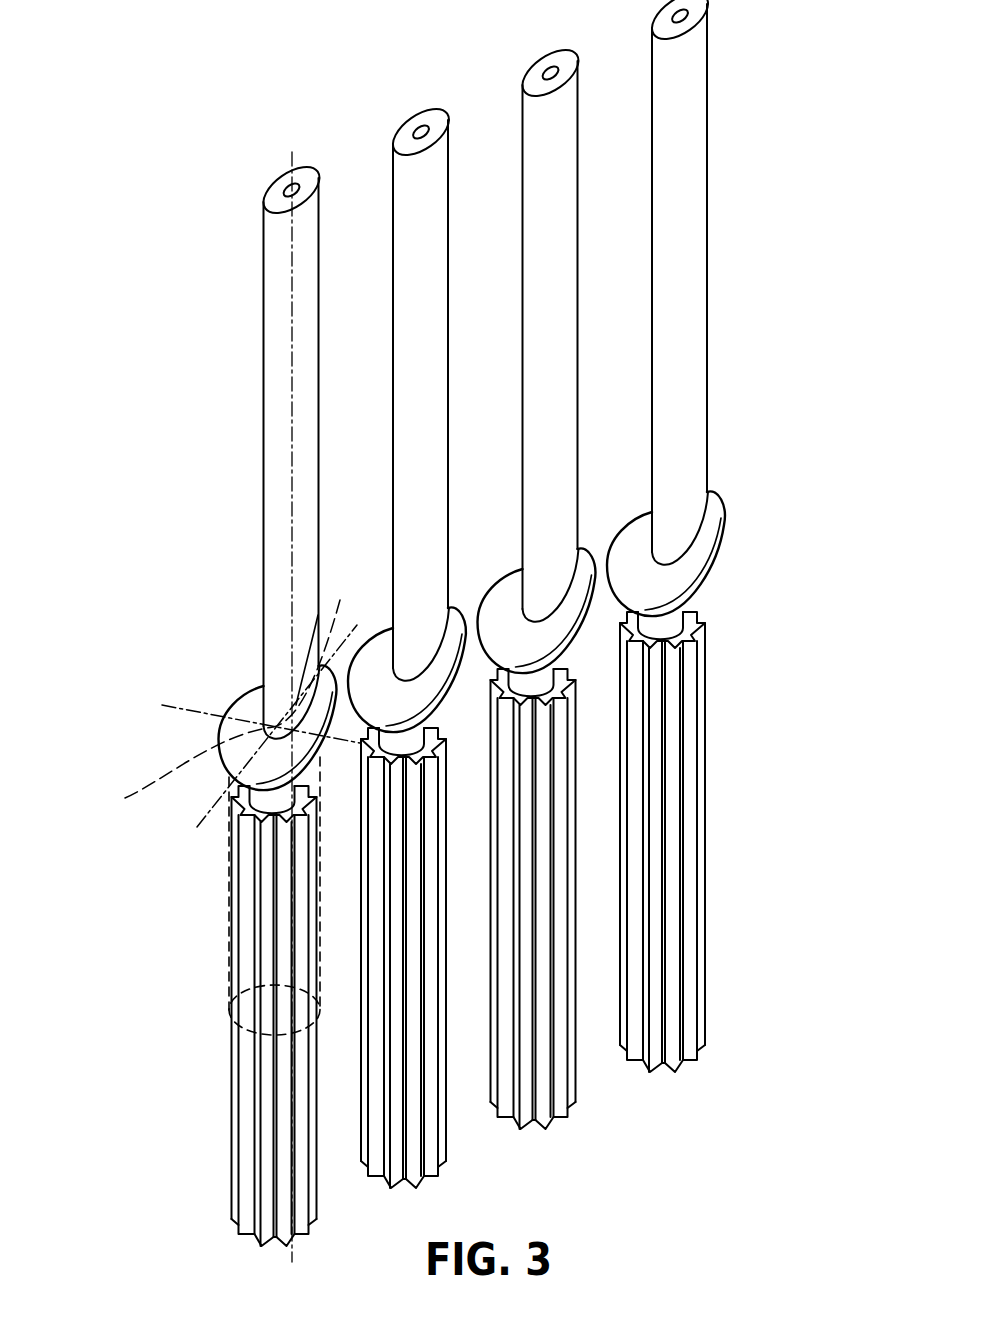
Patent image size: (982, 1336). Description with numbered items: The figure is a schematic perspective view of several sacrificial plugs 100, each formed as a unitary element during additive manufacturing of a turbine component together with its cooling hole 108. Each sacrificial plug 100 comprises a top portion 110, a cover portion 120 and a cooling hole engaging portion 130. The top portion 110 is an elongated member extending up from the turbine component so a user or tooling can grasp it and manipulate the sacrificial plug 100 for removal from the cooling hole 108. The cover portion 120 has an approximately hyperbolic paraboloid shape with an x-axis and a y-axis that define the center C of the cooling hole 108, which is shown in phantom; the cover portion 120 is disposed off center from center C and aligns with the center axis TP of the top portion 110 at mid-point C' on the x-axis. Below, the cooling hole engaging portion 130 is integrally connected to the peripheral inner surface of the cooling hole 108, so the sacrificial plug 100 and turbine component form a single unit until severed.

The sacrificial plug 100 is at (168, 369).
The cooling hole 108 is at (228, 893).
The top portion 110 is at (263, 324).
The cover portion 120 is at (243, 698).
The cooling hole engaging portion 130 is at (705, 766).